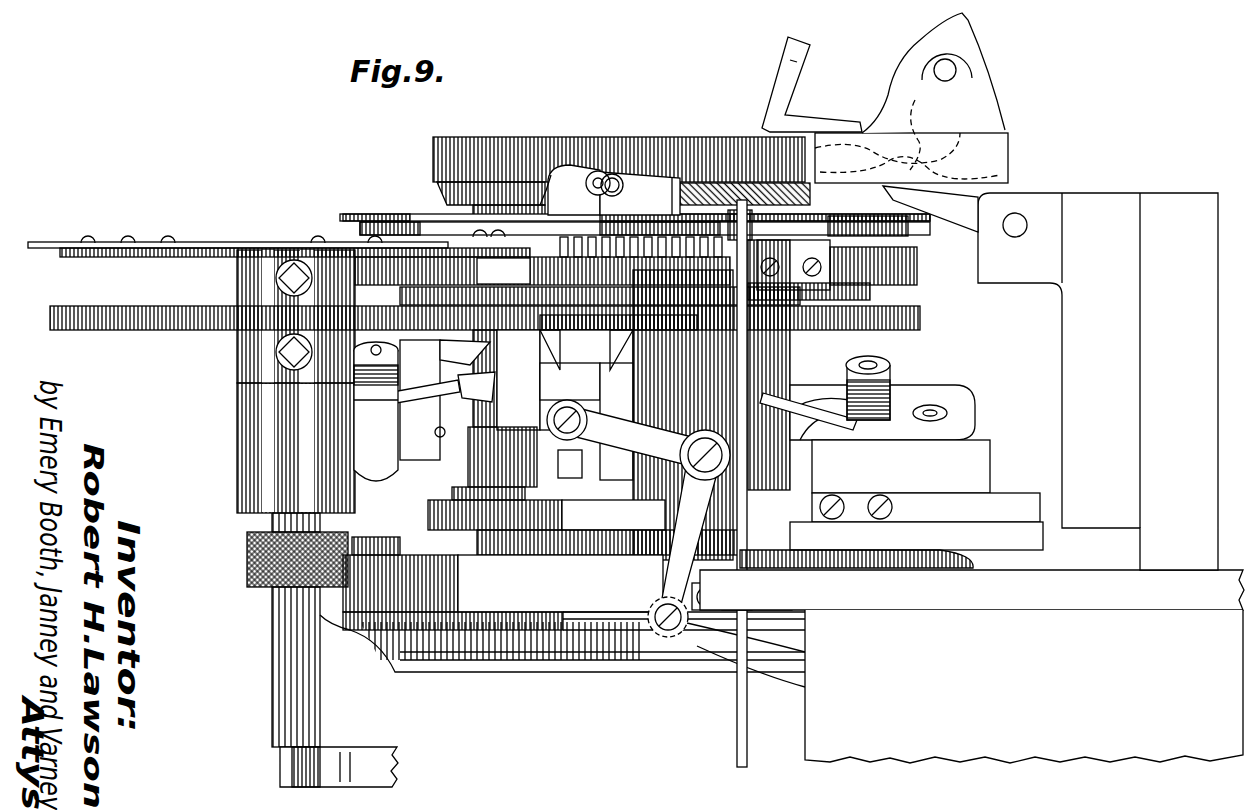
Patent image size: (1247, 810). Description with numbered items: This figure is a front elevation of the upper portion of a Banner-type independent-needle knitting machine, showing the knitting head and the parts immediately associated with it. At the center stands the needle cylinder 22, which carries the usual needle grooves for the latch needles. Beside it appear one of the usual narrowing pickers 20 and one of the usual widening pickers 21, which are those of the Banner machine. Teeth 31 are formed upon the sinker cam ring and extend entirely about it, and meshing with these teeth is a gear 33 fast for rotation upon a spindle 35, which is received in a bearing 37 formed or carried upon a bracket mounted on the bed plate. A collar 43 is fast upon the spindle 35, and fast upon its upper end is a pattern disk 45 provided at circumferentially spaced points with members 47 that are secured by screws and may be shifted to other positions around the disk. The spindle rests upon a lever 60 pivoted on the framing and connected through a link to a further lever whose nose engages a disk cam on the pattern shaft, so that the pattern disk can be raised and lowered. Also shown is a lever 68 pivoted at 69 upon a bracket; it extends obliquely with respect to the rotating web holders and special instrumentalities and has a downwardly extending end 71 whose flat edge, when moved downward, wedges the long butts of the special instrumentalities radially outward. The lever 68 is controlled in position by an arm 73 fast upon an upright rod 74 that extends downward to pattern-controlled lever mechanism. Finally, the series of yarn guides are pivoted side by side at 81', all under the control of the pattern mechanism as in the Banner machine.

The narrowing picker 20 is at (805, 398).
The widening picker 21 is at (430, 400).
The needle cylinder 22 is at (772, 341).
The teeth 31 is at (565, 298).
The gear 33 is at (185, 325).
The spindle 35 is at (280, 670).
The bearing 37 is at (250, 450).
The collar 43 is at (246, 358).
The pattern disk 45 is at (140, 256).
The member 47 is at (58, 247).
The lever 60 is at (284, 772).
The lever 68 is at (583, 168).
The pivot 69 is at (592, 188).
The downwardly extending end 71 is at (545, 176).
The arm 73 is at (660, 208).
The upright rod 74 is at (747, 511).
The pivot of yarn guides 81' is at (911, 98).